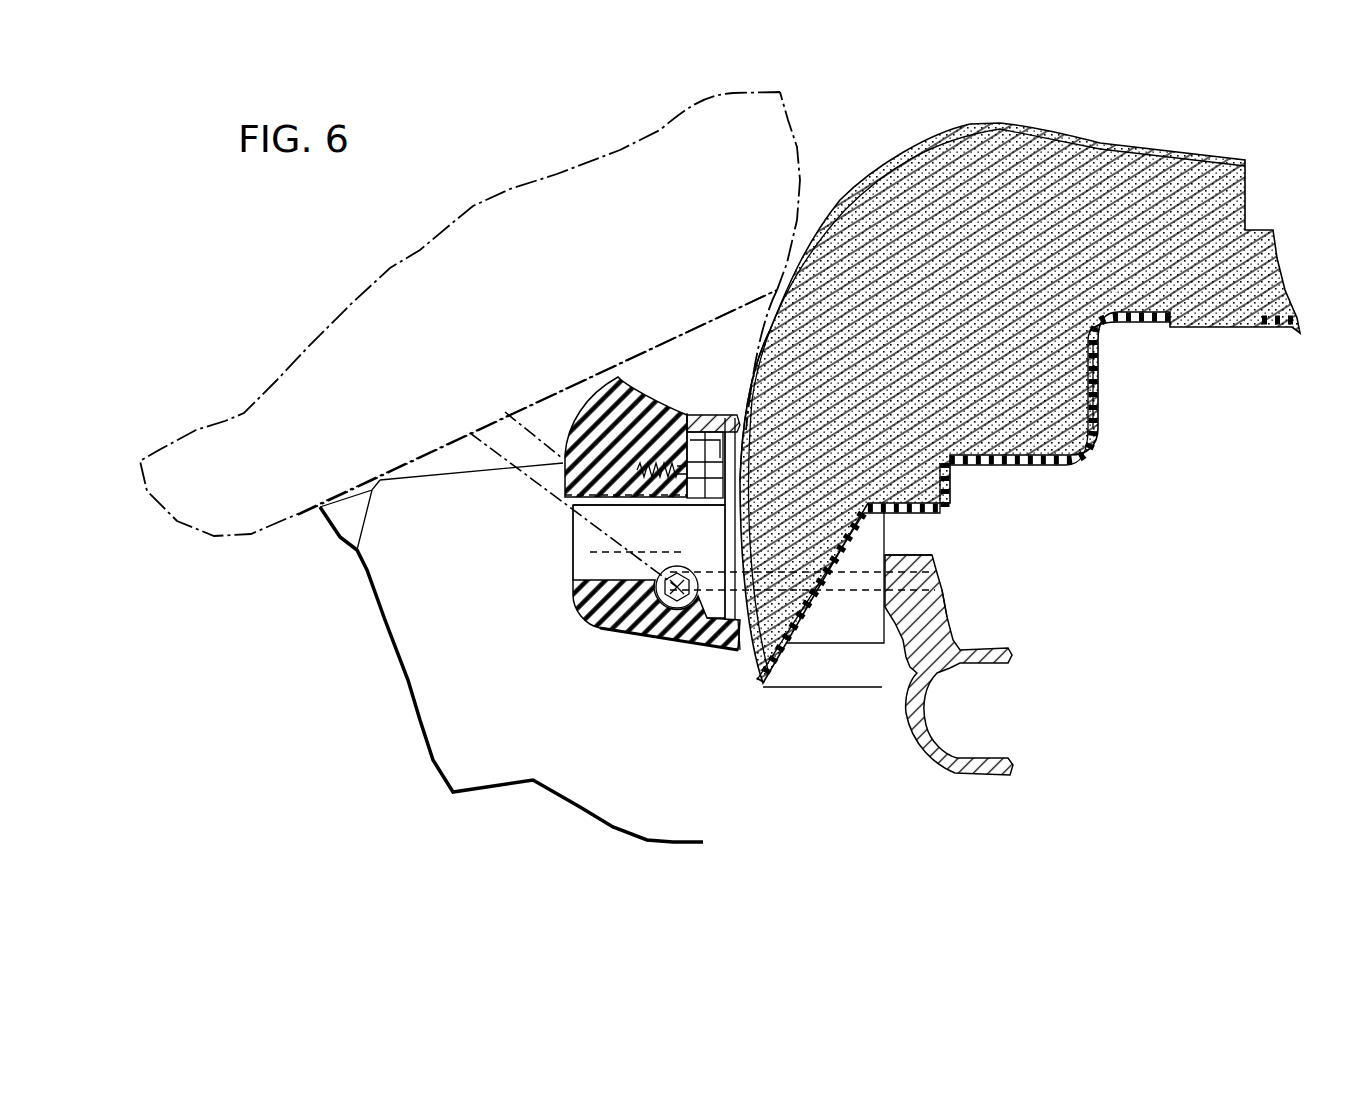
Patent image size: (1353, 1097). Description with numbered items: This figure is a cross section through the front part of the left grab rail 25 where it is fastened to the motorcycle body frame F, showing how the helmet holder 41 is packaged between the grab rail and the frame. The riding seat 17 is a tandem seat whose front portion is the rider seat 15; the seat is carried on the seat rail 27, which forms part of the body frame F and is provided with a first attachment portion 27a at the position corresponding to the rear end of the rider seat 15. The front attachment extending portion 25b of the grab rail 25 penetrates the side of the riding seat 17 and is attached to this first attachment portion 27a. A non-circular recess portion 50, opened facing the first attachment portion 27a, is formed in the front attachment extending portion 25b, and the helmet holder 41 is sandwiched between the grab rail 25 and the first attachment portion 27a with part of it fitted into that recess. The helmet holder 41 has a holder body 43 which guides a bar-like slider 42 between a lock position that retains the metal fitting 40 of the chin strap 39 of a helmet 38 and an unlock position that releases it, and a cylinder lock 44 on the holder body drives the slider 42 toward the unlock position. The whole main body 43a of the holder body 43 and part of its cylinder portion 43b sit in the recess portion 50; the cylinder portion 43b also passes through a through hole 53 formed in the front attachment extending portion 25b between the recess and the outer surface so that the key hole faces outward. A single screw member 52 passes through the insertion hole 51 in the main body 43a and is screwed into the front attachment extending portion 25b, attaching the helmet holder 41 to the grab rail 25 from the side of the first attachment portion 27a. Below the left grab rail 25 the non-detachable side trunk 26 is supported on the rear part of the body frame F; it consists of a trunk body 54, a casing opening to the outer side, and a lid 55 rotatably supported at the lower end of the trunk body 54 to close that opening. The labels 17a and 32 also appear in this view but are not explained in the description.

The rider seat 15 is at (1012, 148).
The riding seat 17 is at (1115, 135).
The skin end portion 17a is at (1082, 464).
The grab rail 25 is at (637, 640).
The front attachment extending portion 25b is at (620, 376).
The side trunk 26 is at (433, 466).
The seat rail 27 is at (912, 730).
The first attachment portion 27a is at (930, 553).
The side wall 32 is at (863, 594).
The helmet 38 is at (798, 148).
The chin strap 39 is at (470, 433).
The metal fitting 40 is at (715, 635).
The helmet holder 41 is at (729, 502).
The slider 42 is at (657, 606).
The holder body 43 is at (726, 521).
The main body 43a is at (684, 412).
The cylinder portion 43b is at (566, 579).
The cylinder lock 44 is at (571, 578).
The recess portion 50 is at (733, 432).
The insertion hole 51 is at (688, 494).
The screw member 52 is at (720, 432).
The through hole 53 is at (585, 555).
The trunk body 54 is at (546, 465).
The lid 55 is at (358, 497).
The body frame F is at (956, 620).